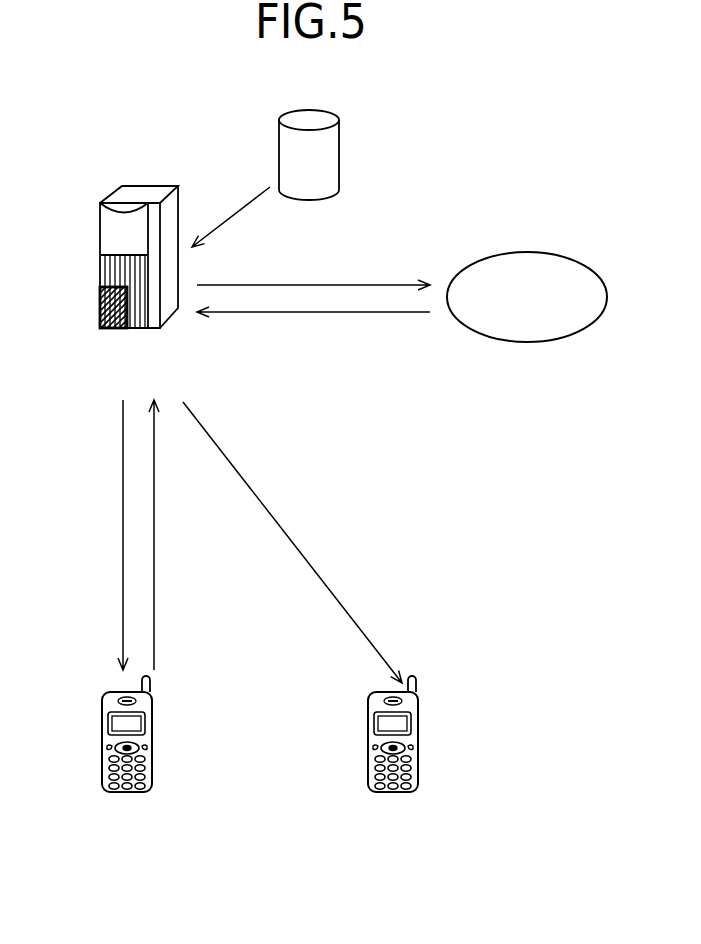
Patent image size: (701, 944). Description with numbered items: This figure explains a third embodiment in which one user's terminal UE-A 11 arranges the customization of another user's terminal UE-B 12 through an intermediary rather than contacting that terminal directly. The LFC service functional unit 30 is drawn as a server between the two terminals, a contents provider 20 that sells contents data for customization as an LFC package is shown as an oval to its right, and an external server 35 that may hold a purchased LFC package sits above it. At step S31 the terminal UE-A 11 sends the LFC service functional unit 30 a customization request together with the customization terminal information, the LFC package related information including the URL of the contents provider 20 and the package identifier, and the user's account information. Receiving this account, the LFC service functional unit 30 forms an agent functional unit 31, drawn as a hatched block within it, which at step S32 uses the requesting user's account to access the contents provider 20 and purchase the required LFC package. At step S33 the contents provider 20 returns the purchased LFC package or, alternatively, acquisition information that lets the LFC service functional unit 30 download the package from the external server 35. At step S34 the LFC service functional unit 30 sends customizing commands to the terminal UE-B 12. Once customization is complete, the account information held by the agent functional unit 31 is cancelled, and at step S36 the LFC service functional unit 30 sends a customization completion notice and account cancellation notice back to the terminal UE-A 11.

The LFC service functional unit 30 is at (150, 184).
The agent functional unit 31 is at (100, 318).
The external server 35 is at (341, 142).
The contents provider 20 is at (590, 258).
The terminal UE-A 11 is at (155, 710).
The terminal UE-B 12 is at (423, 712).
The step of notifying customization request S31 is at (156, 567).
The step of purchasing LFC package S32 is at (326, 284).
The step of notifying purchased LFC package S33 is at (326, 315).
The step of sending customization commands S34 is at (290, 533).
The step of sending completion and cancellation notices S36 is at (121, 567).